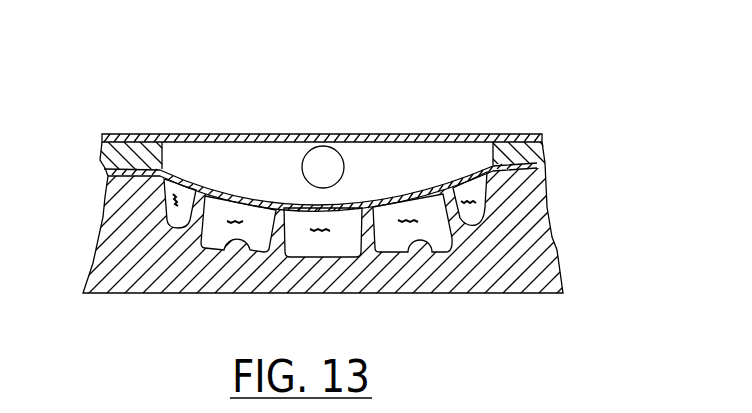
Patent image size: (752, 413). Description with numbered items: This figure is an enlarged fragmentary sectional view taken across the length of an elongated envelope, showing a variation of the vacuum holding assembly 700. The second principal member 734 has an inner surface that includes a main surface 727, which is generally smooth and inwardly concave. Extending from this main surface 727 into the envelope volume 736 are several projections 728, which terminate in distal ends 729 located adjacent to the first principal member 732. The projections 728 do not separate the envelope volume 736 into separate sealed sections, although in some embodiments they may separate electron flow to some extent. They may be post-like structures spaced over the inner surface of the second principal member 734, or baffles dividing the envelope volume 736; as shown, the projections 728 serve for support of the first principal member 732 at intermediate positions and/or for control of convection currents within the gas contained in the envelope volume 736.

The vacuum holding assembly 700 is at (550, 110).
The main surface 727 is at (248, 254).
The projections 728 is at (180, 228).
The distal ends 729 is at (181, 186).
The first principal member 732 is at (343, 200).
The second principal member 734 is at (552, 238).
The envelope volume 736 is at (300, 217).